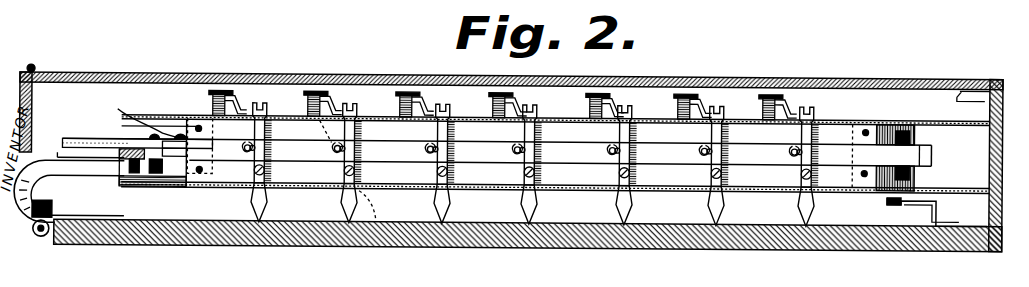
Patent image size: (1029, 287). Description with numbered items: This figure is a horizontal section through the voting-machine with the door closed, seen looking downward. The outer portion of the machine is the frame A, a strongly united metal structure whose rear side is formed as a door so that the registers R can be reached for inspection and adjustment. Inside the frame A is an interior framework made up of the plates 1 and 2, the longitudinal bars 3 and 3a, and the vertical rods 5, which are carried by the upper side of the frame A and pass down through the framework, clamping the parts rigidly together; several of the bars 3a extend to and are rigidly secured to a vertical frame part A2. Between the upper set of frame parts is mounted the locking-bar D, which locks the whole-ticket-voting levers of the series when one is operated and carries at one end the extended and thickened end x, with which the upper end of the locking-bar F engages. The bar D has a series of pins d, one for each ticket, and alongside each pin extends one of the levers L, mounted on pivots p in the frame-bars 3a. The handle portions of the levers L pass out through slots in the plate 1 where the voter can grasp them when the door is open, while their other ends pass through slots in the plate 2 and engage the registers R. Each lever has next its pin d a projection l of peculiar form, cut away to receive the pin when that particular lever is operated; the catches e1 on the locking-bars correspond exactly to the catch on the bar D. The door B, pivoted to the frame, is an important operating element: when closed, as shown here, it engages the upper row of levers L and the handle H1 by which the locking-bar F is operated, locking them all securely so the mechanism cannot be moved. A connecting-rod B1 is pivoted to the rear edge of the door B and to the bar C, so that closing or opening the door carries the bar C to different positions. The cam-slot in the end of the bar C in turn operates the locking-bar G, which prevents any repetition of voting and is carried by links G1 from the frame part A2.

The frame A is at (153, 72).
The vertical frame part A2 is at (123, 146).
The door B is at (226, 224).
The connecting-rod B1 is at (82, 177).
The bar C is at (79, 139).
The locking-bar D is at (868, 73).
The locking-bar F is at (915, 169).
The locking-bar G is at (178, 160).
The links G1 is at (140, 177).
The handle H1 is at (928, 195).
The levers L is at (271, 126).
The registers R is at (212, 104).
The plate 1 is at (405, 187).
The plate 2 is at (152, 113).
The longitudinal bar 3 is at (654, 108).
The longitudinal bar 3a is at (336, 179).
The vertical rods 5 is at (203, 129).
The pins d is at (252, 160).
The catches e1 is at (146, 116).
The projection l is at (253, 140).
The pivots p is at (269, 168).
The extended and thickened end x is at (913, 155).